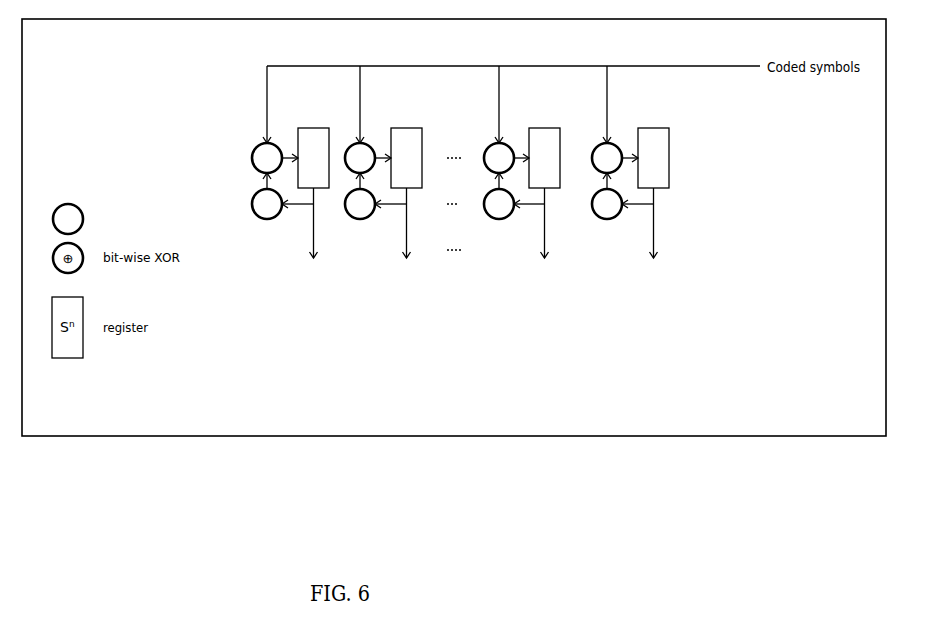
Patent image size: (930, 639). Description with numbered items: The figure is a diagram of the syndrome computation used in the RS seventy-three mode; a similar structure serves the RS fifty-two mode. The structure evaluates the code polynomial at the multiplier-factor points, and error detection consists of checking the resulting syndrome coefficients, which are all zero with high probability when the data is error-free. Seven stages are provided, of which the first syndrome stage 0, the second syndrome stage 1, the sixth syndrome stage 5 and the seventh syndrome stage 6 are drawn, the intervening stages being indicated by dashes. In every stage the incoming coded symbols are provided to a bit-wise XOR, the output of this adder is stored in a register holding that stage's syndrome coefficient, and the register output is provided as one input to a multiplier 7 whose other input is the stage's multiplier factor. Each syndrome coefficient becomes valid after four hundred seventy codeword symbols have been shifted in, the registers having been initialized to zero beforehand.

The syndrome stage 0 is at (267, 219).
The syndrome stage 1 is at (360, 219).
The syndrome stage 5 is at (499, 219).
The syndrome stage 6 is at (607, 219).
The multiplier 7 is at (123, 219).